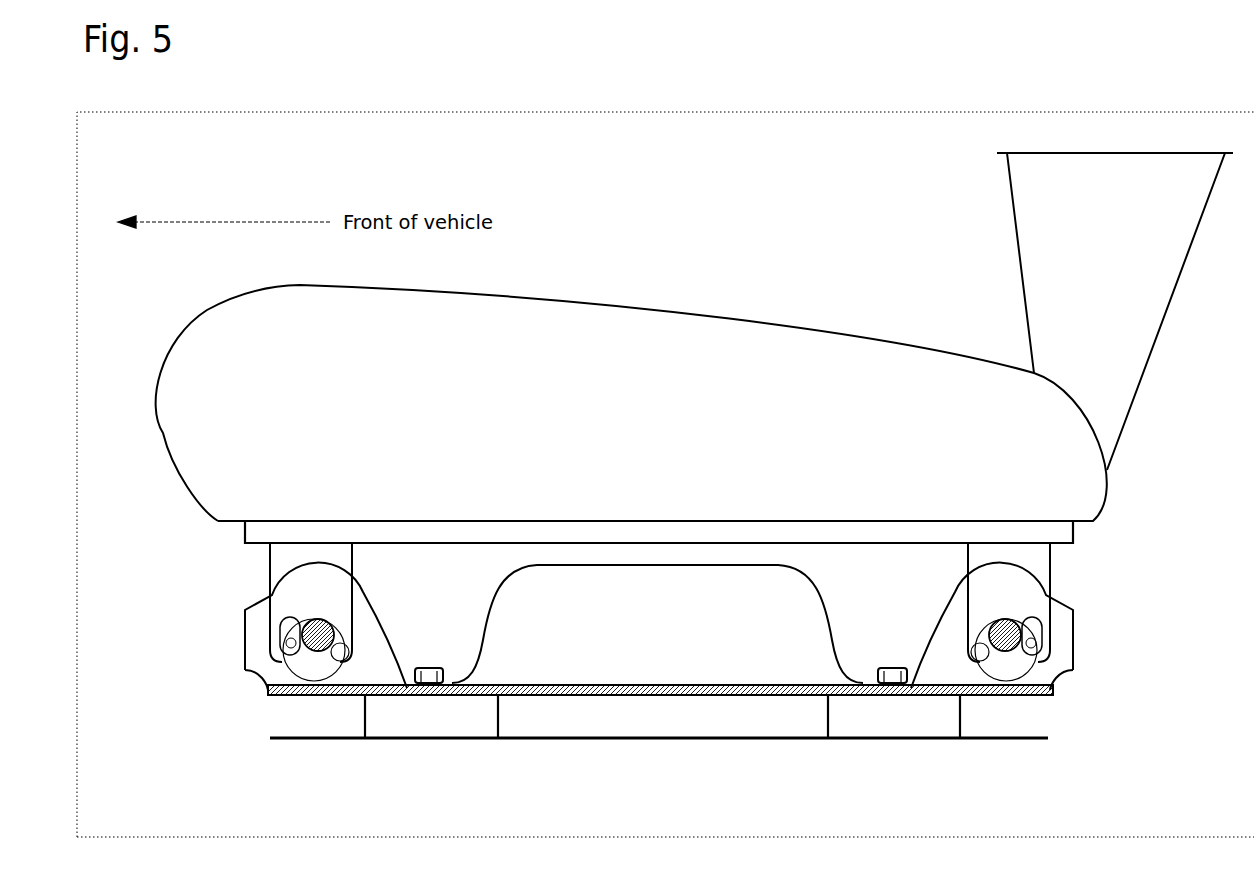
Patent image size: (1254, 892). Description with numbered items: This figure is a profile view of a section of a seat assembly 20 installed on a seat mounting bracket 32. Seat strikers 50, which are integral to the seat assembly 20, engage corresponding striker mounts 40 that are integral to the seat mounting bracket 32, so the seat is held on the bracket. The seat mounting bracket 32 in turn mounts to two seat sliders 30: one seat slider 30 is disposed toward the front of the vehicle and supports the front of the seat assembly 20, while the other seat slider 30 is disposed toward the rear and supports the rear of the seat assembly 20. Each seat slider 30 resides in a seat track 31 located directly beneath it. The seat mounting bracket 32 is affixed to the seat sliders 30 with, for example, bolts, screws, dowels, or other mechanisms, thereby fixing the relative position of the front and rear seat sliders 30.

The seat assembly 20 is at (613, 298).
The seat slider 30 is at (467, 725).
The seat track 31 is at (742, 565).
The seat mounting bracket 32 is at (490, 634).
The striker mount 40 is at (318, 655).
The seat striker 50 is at (278, 635).